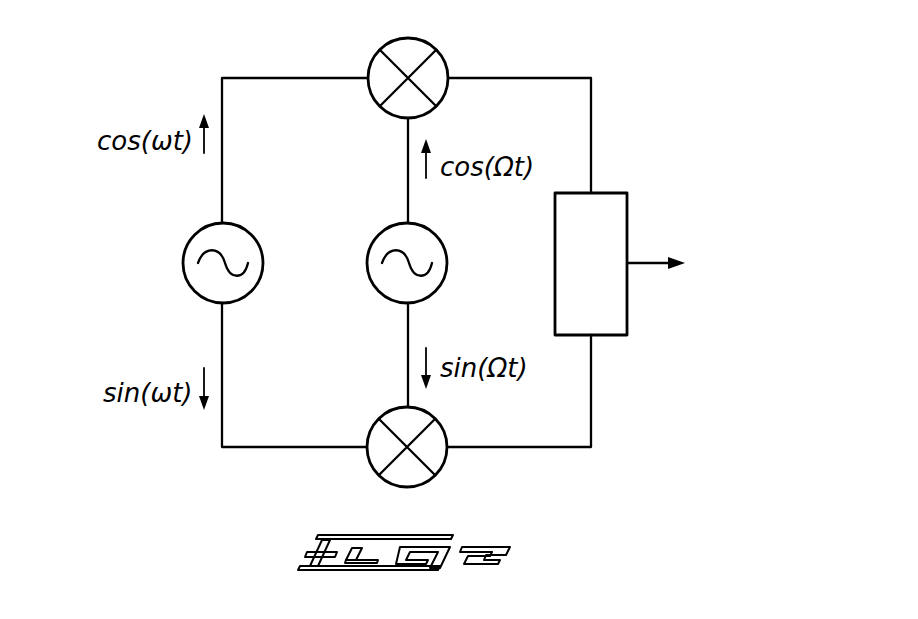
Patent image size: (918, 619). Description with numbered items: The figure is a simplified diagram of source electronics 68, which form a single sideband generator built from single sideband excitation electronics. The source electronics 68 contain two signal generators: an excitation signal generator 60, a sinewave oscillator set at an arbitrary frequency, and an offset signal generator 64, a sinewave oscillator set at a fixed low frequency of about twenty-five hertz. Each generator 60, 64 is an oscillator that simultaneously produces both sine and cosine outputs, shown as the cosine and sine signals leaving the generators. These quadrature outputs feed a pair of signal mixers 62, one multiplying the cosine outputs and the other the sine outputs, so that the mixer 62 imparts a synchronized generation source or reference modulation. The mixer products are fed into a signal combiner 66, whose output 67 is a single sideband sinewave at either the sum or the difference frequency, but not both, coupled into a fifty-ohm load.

The source electronics 68 is at (138, 27).
The signal mixer 62 is at (390, 42).
The excitation signal generator 60 is at (206, 229).
The offset signal generator 64 is at (390, 229).
The signal combiner 66 is at (573, 253).
The output terminal 67 is at (648, 266).